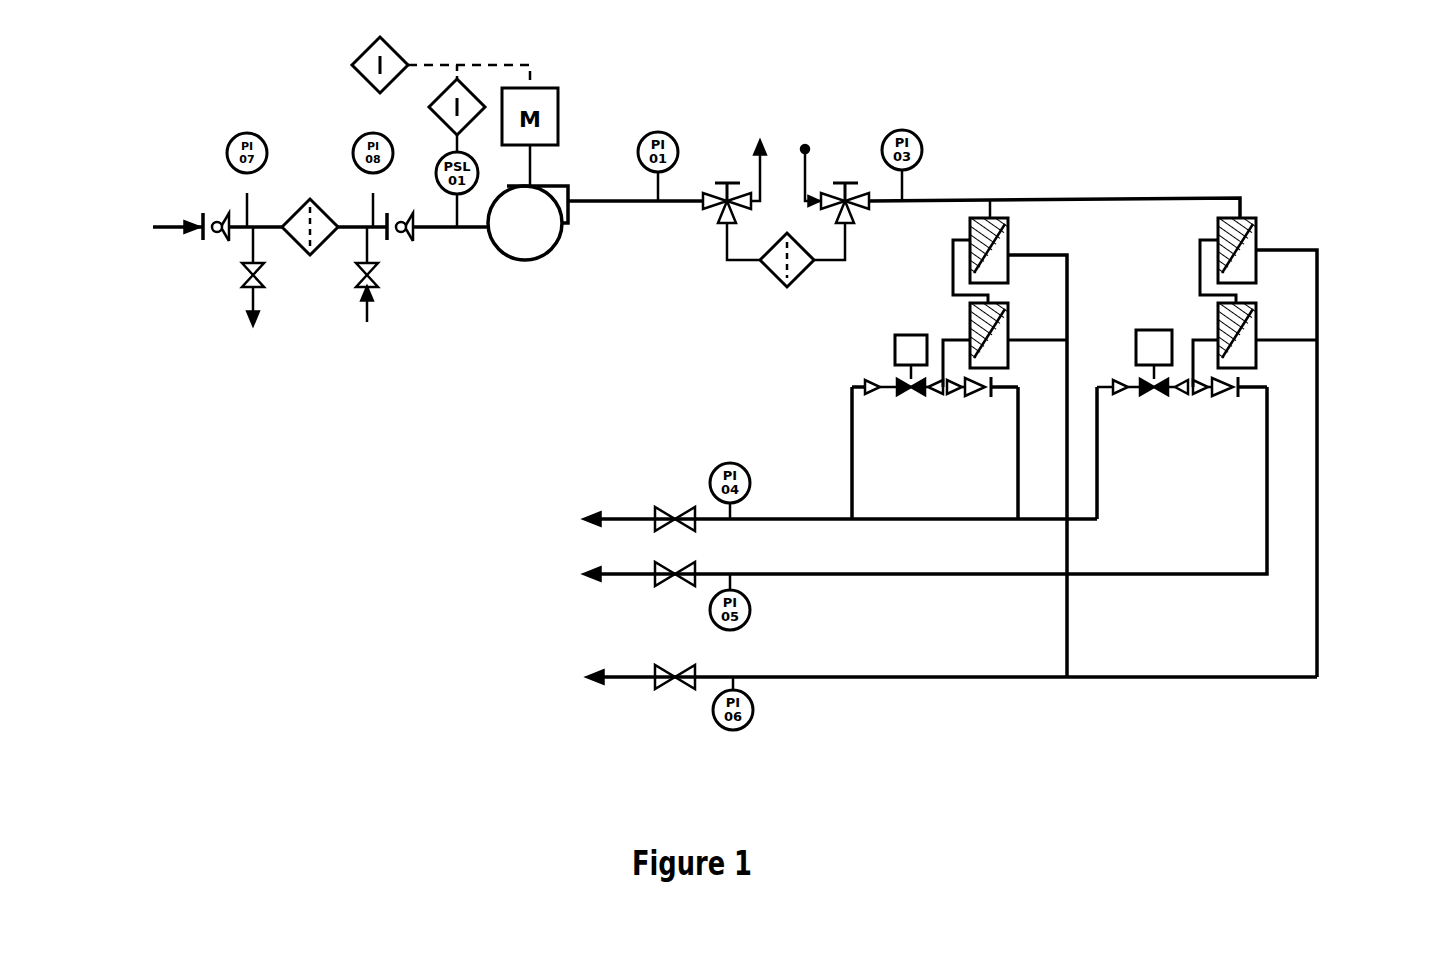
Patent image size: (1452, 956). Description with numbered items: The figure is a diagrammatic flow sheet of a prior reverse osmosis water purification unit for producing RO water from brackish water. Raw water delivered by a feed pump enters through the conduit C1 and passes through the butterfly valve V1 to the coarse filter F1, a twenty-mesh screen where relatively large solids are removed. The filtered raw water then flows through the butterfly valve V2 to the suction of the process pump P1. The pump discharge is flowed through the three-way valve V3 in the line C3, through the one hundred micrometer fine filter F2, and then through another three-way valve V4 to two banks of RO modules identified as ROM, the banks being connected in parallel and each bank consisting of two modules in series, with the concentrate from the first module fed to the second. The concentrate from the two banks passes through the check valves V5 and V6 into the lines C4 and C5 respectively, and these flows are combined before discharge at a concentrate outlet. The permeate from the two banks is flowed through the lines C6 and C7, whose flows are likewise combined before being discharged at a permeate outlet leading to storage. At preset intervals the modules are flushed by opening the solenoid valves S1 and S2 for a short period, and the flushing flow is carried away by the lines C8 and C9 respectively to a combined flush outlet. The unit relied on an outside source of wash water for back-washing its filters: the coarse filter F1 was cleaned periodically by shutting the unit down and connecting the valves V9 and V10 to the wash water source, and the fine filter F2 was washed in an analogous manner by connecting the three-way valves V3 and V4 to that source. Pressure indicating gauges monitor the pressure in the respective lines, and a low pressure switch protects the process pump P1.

The conduit C1 is at (172, 225).
The butterfly valve V1 is at (213, 237).
The valve V9 is at (252, 285).
The coarse filter F1 is at (310, 249).
The valve V10 is at (373, 287).
The butterfly valve V2 is at (400, 237).
The process pump P1 is at (533, 253).
The three-way valve V3 is at (720, 183).
The fine filter F2 is at (776, 278).
The three-way valve V4 is at (852, 183).
The line C3 is at (950, 200).
The RO modules ROM is at (1218, 328).
The solenoid valve S1 is at (911, 365).
The solenoid valve S2 is at (1154, 362).
The check valve V5 is at (983, 392).
The check valve V6 is at (1224, 392).
The line C8 is at (850, 473).
The line C4 is at (1015, 443).
The line C7 is at (1065, 542).
The line C5 is at (1225, 572).
The line C6 is at (1317, 533).
The line C9 is at (877, 522).